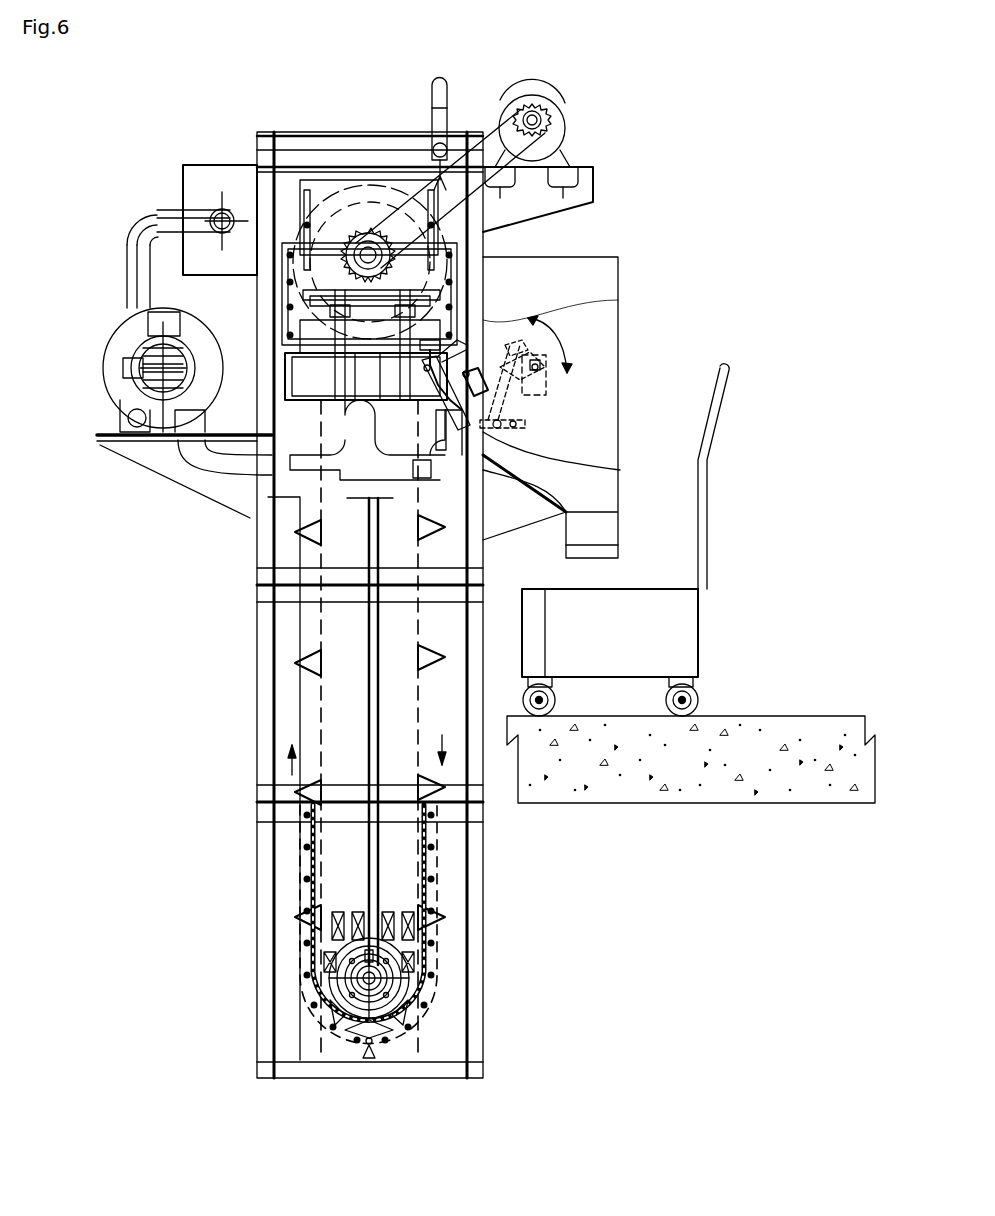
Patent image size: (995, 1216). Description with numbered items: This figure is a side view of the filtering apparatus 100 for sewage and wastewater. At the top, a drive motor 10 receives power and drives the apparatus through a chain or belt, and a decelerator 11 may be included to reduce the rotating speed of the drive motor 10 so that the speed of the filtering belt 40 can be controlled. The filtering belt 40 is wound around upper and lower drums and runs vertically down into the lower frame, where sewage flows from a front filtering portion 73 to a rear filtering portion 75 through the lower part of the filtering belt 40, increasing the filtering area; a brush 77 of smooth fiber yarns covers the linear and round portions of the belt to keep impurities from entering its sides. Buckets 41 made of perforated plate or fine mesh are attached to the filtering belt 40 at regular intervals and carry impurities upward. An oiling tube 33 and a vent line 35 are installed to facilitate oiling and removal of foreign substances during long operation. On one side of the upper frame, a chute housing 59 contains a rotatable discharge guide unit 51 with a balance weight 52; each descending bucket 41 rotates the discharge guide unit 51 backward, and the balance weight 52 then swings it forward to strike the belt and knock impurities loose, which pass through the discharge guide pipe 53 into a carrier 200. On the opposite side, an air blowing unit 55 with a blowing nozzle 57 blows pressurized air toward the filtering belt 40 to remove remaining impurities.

The filtering apparatus 100 is at (130, 176).
The drive motor 10 is at (555, 103).
The decelerator 11 is at (557, 137).
The blowing nozzle 57 is at (470, 330).
The chute housing 59 is at (590, 273).
The balance weight 52 is at (572, 332).
The discharge guide unit 51 is at (562, 375).
The discharge guide pipe 53 is at (525, 428).
The air blowing unit 55 is at (482, 490).
The filtering belt 40 is at (268, 497).
The bucket 41 is at (298, 532).
The vent line 35 is at (372, 557).
The oiling tube 33 is at (368, 596).
The front filtering portion 73 is at (290, 888).
The rear filtering portion 75 is at (455, 860).
The brush 77 is at (430, 890).
The carrier 200 is at (667, 633).